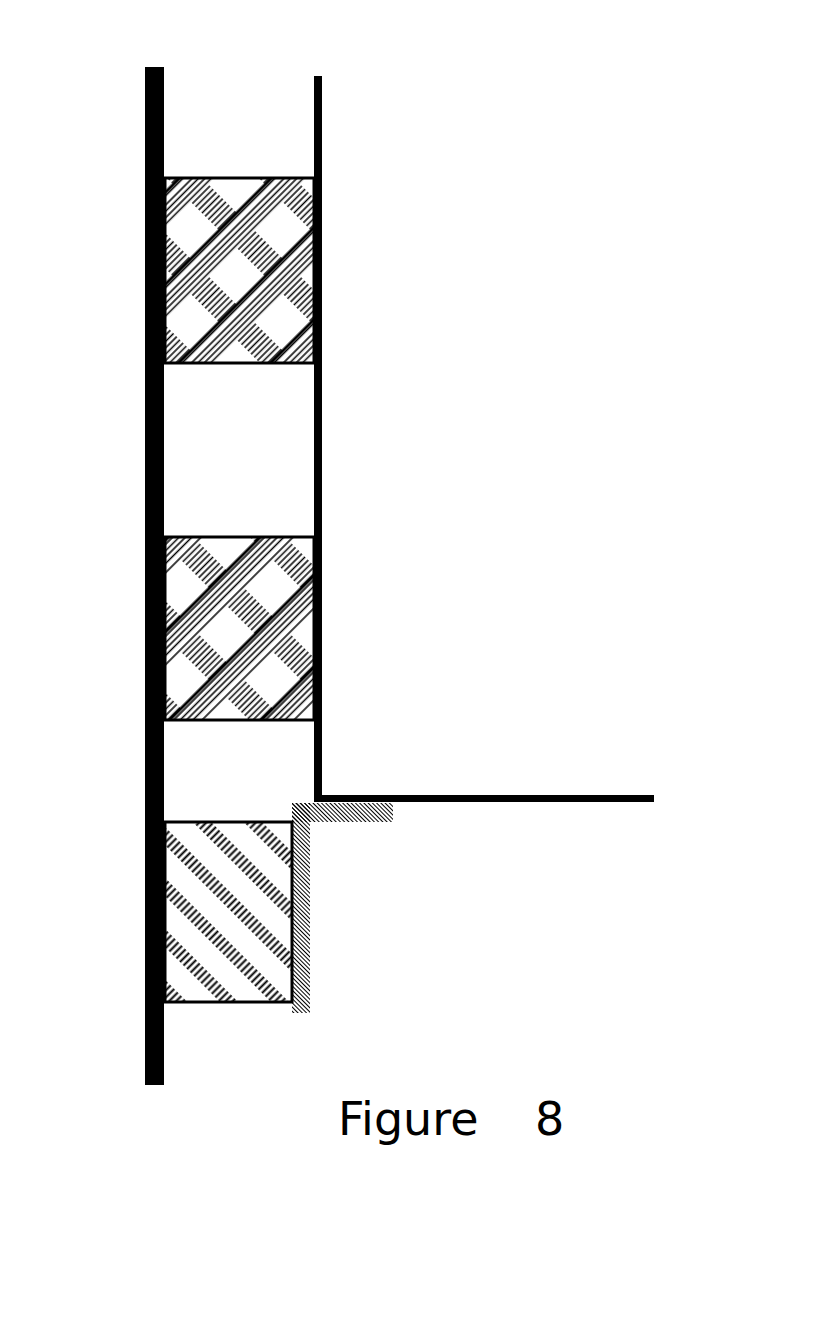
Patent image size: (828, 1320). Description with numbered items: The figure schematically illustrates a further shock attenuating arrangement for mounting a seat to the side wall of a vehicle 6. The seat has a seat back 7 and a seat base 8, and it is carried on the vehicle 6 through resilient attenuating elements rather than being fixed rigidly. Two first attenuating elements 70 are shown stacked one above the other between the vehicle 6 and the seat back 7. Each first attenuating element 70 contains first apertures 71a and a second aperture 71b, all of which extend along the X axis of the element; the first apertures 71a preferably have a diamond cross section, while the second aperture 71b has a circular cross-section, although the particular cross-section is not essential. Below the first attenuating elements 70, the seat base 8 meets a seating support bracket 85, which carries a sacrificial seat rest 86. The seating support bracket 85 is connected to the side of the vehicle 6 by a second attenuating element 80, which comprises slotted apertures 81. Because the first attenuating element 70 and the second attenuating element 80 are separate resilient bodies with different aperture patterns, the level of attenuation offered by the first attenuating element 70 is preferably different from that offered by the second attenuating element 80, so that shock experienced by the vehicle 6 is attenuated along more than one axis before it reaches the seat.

The vehicle 6 is at (146, 100).
The seat back 7 is at (322, 103).
The seat base 8 is at (634, 795).
The first attenuating element 70 is at (322, 184).
The first apertures 71a is at (281, 240).
The second aperture 71b is at (240, 281).
The second attenuating element 80 is at (146, 975).
The slotted apertures 81 is at (146, 878).
The seating support bracket 85 is at (310, 981).
The sacrificial seat rest 86 is at (368, 822).